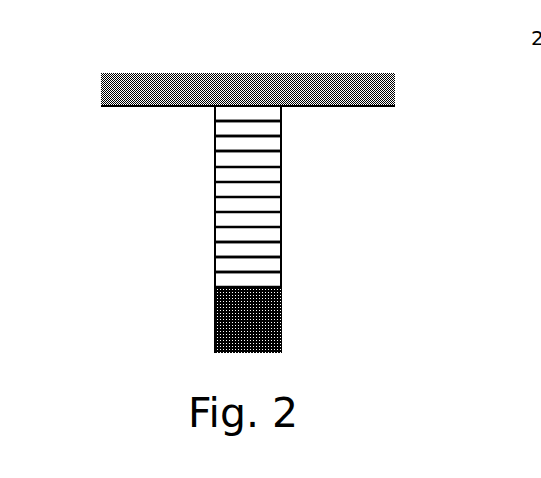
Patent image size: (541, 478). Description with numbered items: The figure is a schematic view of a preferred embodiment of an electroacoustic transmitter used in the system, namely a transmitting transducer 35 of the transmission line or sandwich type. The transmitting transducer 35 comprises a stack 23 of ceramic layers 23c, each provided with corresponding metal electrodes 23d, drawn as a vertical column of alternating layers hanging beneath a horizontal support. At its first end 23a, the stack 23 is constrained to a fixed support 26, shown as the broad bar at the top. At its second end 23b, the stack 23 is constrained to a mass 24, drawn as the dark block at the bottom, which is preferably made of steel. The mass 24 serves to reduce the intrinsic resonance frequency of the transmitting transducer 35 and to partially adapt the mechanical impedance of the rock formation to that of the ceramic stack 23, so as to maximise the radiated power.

The fixed support 26 is at (205, 80).
The stack 23 is at (221, 240).
The first end 23a is at (213, 108).
The second end 23b is at (215, 289).
The ceramic layers 23c is at (282, 125).
The metal electrodes 23d is at (278, 240).
The mass 24 is at (282, 330).
The transmitting transducer 35 is at (347, 252).